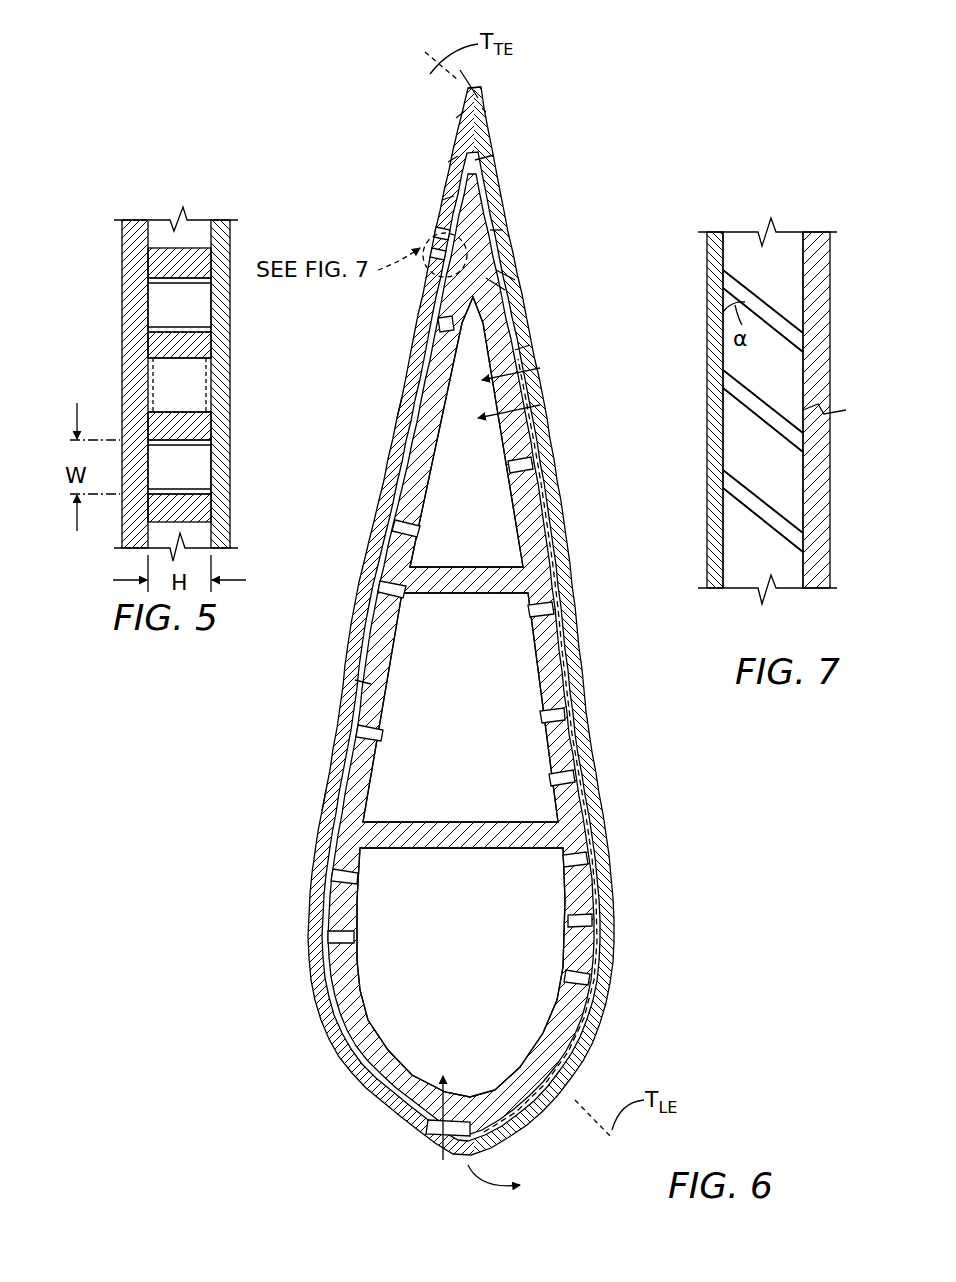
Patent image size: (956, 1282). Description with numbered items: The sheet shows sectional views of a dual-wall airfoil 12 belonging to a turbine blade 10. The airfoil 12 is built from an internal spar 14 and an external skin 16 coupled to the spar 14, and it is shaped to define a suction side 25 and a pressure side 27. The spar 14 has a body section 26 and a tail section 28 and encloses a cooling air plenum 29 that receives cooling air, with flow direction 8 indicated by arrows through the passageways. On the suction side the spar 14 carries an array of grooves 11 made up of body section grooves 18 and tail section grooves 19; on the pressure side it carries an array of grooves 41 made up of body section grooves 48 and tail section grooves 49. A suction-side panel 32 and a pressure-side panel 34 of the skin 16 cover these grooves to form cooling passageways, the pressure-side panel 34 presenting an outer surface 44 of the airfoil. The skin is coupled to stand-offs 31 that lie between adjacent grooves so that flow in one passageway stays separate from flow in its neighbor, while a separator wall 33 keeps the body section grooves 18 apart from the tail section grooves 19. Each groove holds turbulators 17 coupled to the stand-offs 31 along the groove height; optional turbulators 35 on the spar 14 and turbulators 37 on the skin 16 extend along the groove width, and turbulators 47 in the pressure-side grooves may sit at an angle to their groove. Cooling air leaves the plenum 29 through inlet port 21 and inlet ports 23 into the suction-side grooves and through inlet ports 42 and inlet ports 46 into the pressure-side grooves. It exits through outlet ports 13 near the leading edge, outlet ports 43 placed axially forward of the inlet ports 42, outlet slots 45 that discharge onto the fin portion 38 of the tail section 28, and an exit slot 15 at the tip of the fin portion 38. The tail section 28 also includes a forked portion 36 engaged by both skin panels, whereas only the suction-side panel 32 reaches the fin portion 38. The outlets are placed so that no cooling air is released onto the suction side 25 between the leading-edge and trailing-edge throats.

In FIG. 6, the flow direction 8 is at (498, 790).
In FIG. 6, the blade 10 is at (462, 72).
In FIG. 6, the array of grooves 11 is at (516, 112).
In FIG. 5, the airfoil 12 is at (182, 128).
In FIG. 6, the airfoil 12 is at (592, 92).
In FIG. 7, the airfoil 12 is at (798, 130).
In FIG. 6, the outlet ports 13 is at (470, 1160).
In FIG. 5, the spar 14 is at (130, 216).
In FIG. 6, the spar 14 is at (580, 978).
In FIG. 7, the spar 14 is at (816, 230).
In FIG. 6, the exit slot 15 is at (480, 124).
In FIG. 5, the skin 16 is at (224, 216).
In FIG. 6, the skin 16 is at (328, 1063).
In FIG. 7, the skin 16 is at (713, 230).
In FIG. 5, the turbulators 17 is at (150, 268).
In FIG. 6, the turbulators 17 is at (476, 164).
In FIG. 6, the body section grooves 18 is at (556, 608).
In FIG. 5, the tail section grooves 19 is at (150, 306).
In FIG. 6, the tail section grooves 19 is at (492, 226).
In FIG. 6, the inlet port 21 is at (446, 323).
In FIG. 6, the inlet ports 23 is at (535, 466).
In FIG. 6, the suction side 25 is at (628, 913).
In FIG. 6, the body section 26 is at (575, 780).
In FIG. 6, the pressure side 27 is at (270, 803).
In FIG. 6, the tail section 28 is at (490, 276).
In FIG. 6, the cooling air plenum 29 is at (492, 710).
In FIG. 5, the stand-offs 31 is at (164, 248).
In FIG. 6, the suction-side panel 32 is at (606, 856).
In FIG. 6, the separator wall 33 is at (522, 356).
In FIG. 6, the pressure-side panel 34 is at (326, 778).
In FIG. 5, the turbulators 35 is at (147, 380).
In FIG. 6, the forked portion 36 is at (500, 266).
In FIG. 5, the turbulators 37 is at (212, 380).
In FIG. 6, the fin portion 38 is at (456, 116).
In FIG. 6, the array of grooves 41 is at (450, 160).
In FIG. 6, the inlet ports 42 is at (395, 525).
In FIG. 6, the outlet ports 43 is at (326, 940).
In FIG. 6, the outer surface 44 is at (397, 419).
In FIG. 6, the outlet slots 45 is at (455, 198).
In FIG. 6, the inlet ports 46 is at (446, 316).
In FIG. 6, the turbulators 47 is at (450, 230).
In FIG. 7, the turbulators 47 is at (746, 292).
In FIG. 6, the body section grooves 48 is at (356, 684).
In FIG. 6, the tail section grooves 49 is at (430, 262).
In FIG. 7, the tail section grooves 49 is at (786, 250).